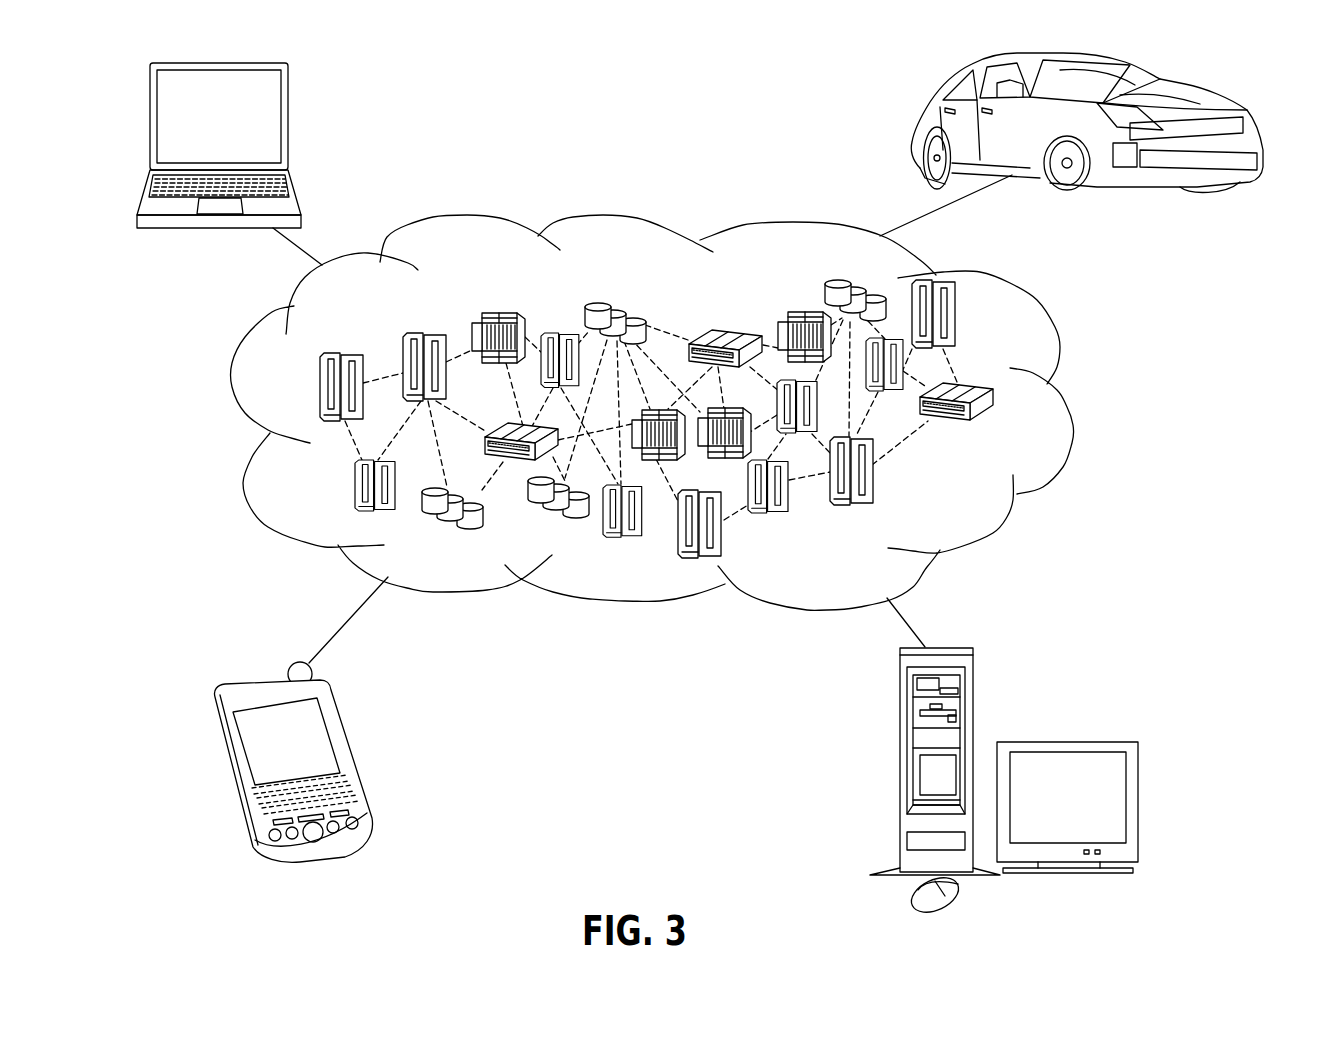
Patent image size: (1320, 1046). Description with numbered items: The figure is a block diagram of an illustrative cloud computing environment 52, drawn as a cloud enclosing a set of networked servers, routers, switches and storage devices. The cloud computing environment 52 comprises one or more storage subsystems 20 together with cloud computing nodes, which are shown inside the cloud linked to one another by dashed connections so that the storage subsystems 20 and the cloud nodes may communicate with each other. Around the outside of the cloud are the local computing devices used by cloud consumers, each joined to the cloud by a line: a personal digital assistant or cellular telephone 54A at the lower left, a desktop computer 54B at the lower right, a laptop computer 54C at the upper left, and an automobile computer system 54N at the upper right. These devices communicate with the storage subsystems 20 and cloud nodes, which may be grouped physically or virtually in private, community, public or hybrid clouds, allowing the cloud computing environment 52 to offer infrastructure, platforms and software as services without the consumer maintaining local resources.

The storage subsystem 20 is at (983, 510).
The cloud computing environment 52 is at (1068, 402).
The personal digital assistant (PDA) or cellular telephone 54A is at (345, 716).
The desktop computer 54B is at (900, 709).
The laptop computer 54C is at (289, 100).
The automobile computer system 54N is at (918, 115).